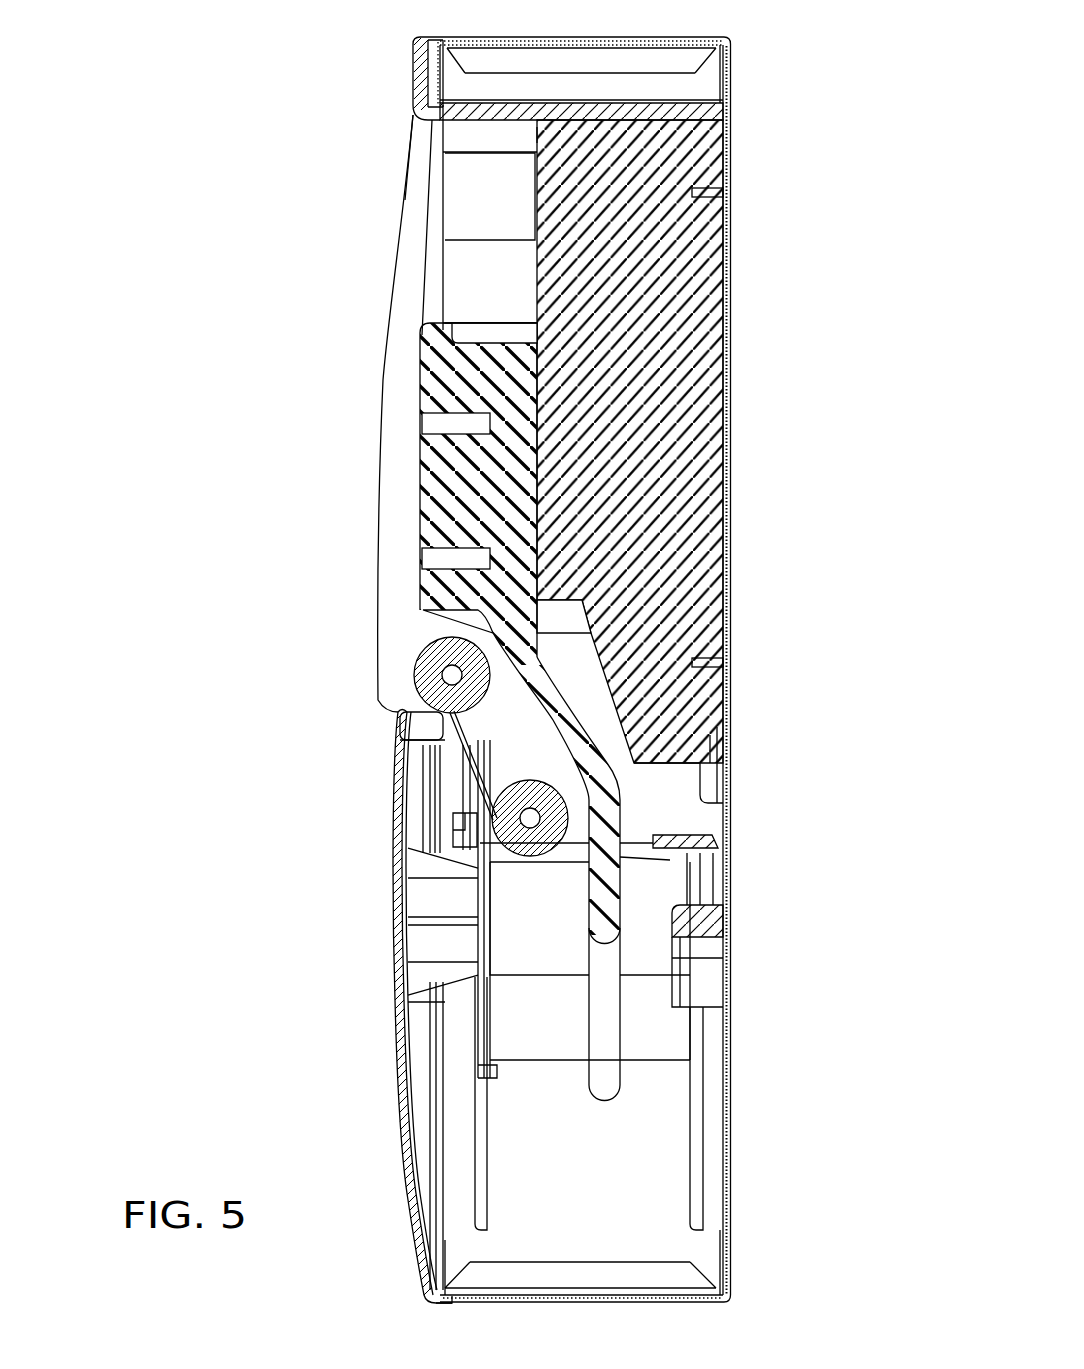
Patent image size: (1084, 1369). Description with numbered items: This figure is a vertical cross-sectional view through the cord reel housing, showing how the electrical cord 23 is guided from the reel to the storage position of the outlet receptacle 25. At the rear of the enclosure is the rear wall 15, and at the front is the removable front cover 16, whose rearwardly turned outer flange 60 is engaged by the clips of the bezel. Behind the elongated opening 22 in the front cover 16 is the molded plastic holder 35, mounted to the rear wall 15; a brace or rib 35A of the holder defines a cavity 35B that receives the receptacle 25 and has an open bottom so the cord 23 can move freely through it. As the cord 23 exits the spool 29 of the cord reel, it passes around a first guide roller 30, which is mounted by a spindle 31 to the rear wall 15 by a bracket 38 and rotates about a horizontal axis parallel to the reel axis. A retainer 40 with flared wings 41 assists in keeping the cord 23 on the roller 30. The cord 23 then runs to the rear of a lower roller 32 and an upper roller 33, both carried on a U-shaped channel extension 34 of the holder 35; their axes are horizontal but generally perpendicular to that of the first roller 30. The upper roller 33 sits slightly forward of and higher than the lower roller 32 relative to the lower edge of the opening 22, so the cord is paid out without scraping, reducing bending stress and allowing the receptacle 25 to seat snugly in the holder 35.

The rear wall 15 is at (732, 700).
The front cover 16 is at (398, 1131).
The elongated opening 22 is at (413, 118).
The electrical cord 23 is at (605, 1037).
The outlet receptacle 25 is at (412, 483).
The spool 29 is at (688, 1170).
The first guide roller 30 is at (550, 940).
The spindle 31 is at (478, 907).
The lower roller 32 is at (522, 785).
The upper roller 33 is at (470, 263).
The U-shaped channel extension 34 is at (460, 755).
The holder 35 is at (537, 152).
The rib 35A is at (680, 404).
The cavity 35B is at (490, 180).
The bracket 38 is at (712, 848).
The retainer 40 is at (418, 895).
The flared wings 41 is at (422, 985).
The outer flange 60 is at (448, 38).